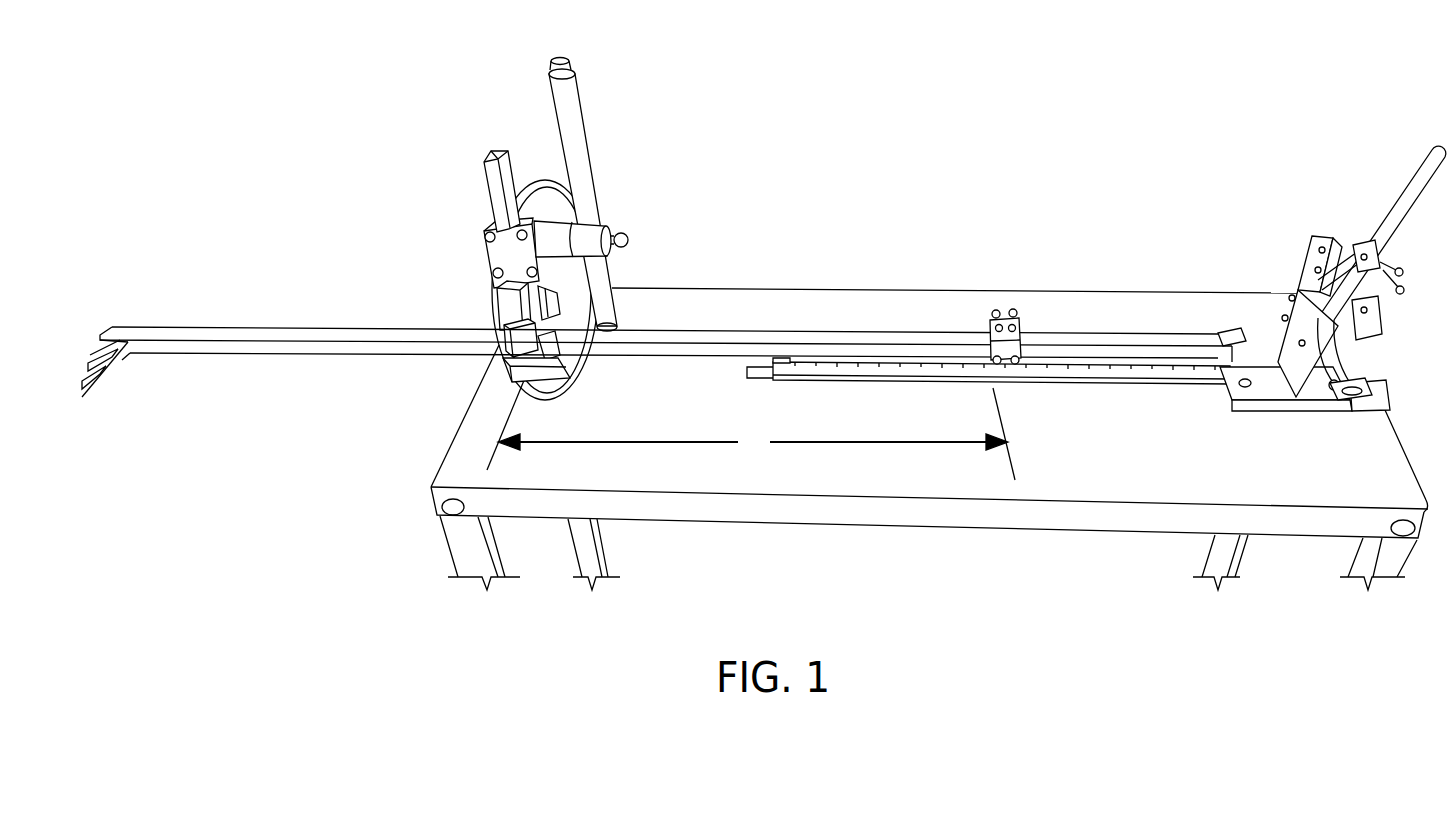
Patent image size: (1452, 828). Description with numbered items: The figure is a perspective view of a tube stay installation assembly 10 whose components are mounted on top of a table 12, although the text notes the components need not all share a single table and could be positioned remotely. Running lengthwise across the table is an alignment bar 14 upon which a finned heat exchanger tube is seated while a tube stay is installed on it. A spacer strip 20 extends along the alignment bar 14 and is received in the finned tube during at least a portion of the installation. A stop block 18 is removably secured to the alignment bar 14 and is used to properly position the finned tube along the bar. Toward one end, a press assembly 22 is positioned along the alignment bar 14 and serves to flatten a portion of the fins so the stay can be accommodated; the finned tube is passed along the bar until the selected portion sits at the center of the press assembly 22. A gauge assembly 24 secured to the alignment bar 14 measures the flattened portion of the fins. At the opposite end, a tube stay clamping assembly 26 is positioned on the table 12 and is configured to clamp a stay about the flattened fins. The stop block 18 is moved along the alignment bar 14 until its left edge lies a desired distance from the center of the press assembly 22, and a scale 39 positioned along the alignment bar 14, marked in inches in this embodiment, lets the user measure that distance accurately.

The tube stay installation assembly 10 is at (930, 271).
The table 12 is at (1158, 293).
The alignment bar 14 is at (403, 358).
The stop block 18 is at (1010, 313).
The spacer strip 20 is at (855, 338).
The press assembly 22 is at (612, 198).
The gauge assembly 24 is at (129, 371).
The tube stay clamping assembly 26 is at (1388, 227).
The scale 39 is at (1068, 383).